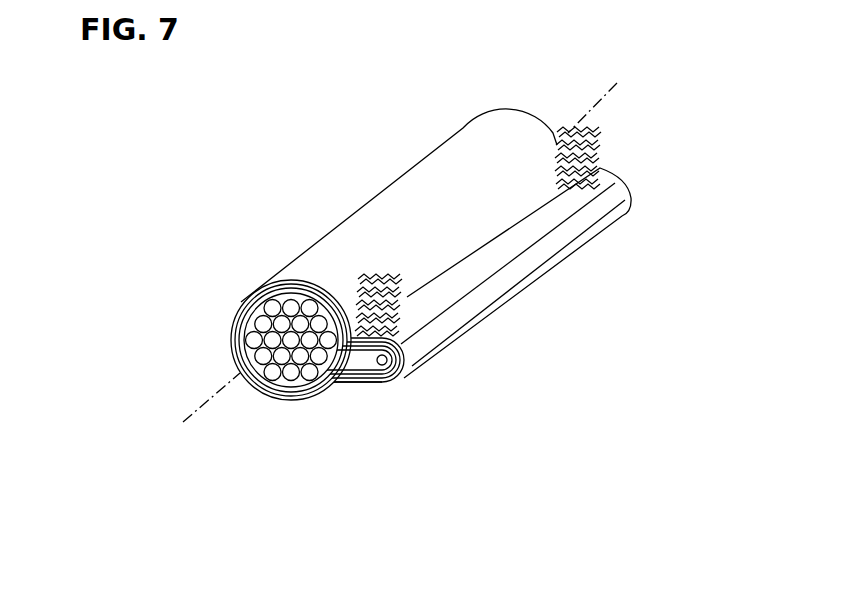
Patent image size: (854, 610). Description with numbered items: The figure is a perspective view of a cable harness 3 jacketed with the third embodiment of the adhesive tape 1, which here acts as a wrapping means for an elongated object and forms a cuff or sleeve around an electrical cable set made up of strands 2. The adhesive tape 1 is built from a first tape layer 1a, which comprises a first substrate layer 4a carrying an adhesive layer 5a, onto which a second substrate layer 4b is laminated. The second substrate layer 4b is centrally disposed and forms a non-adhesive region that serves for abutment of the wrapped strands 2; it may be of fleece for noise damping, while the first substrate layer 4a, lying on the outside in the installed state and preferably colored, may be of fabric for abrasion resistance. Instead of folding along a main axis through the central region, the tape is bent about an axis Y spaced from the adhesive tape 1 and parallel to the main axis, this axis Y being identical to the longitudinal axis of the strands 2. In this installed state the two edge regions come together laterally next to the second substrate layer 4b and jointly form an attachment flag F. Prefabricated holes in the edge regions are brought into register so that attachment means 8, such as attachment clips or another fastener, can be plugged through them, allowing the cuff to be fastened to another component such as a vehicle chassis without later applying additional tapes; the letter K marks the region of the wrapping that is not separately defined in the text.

The adhesive tape 1 is at (424, 168).
The first tape layer 1a is at (410, 540).
The strands 2 is at (258, 340).
The cable harness 3 is at (315, 408).
The first substrate layer 4a is at (338, 219).
The second substrate layer 4b is at (239, 318).
The adhesive layer 5a is at (273, 407).
The attachment means 8 is at (360, 270).
The attachment flag F is at (401, 391).
The flat strip portion K is at (583, 250).
The bending axis Y- Y is at (207, 400).